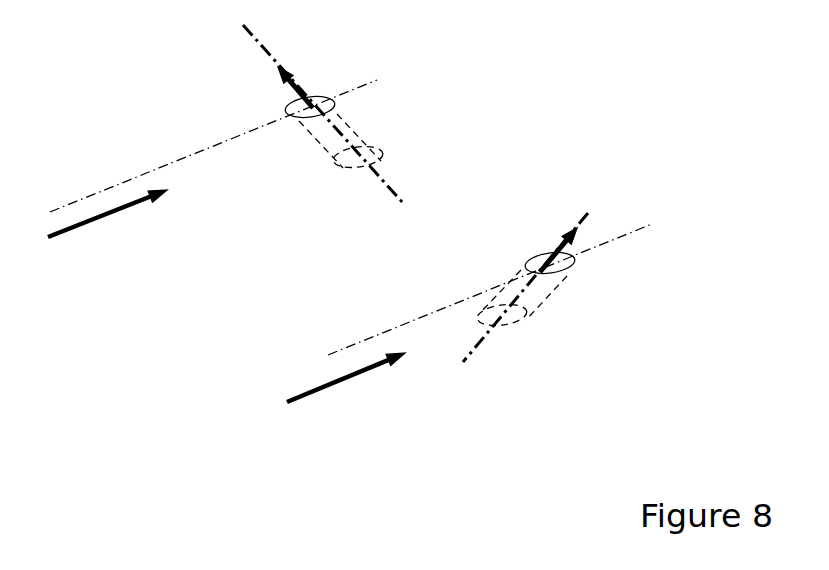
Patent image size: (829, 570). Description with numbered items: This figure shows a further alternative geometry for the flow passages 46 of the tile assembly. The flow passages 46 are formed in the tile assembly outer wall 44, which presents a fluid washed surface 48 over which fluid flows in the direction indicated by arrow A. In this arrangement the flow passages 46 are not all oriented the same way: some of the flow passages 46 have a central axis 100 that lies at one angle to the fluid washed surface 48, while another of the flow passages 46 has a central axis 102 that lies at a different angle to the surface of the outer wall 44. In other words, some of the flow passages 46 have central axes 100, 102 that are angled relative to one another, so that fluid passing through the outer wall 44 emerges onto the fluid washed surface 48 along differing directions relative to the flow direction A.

The central axis 100 is at (257, 43).
The central axis 102 is at (583, 233).
The flow passage 46 is at (335, 105).
The tile assembly outer wall 44 is at (204, 305).
The fluid washed surface 48 is at (247, 305).
The arrow indicating direction of fluid flow A is at (73, 232).